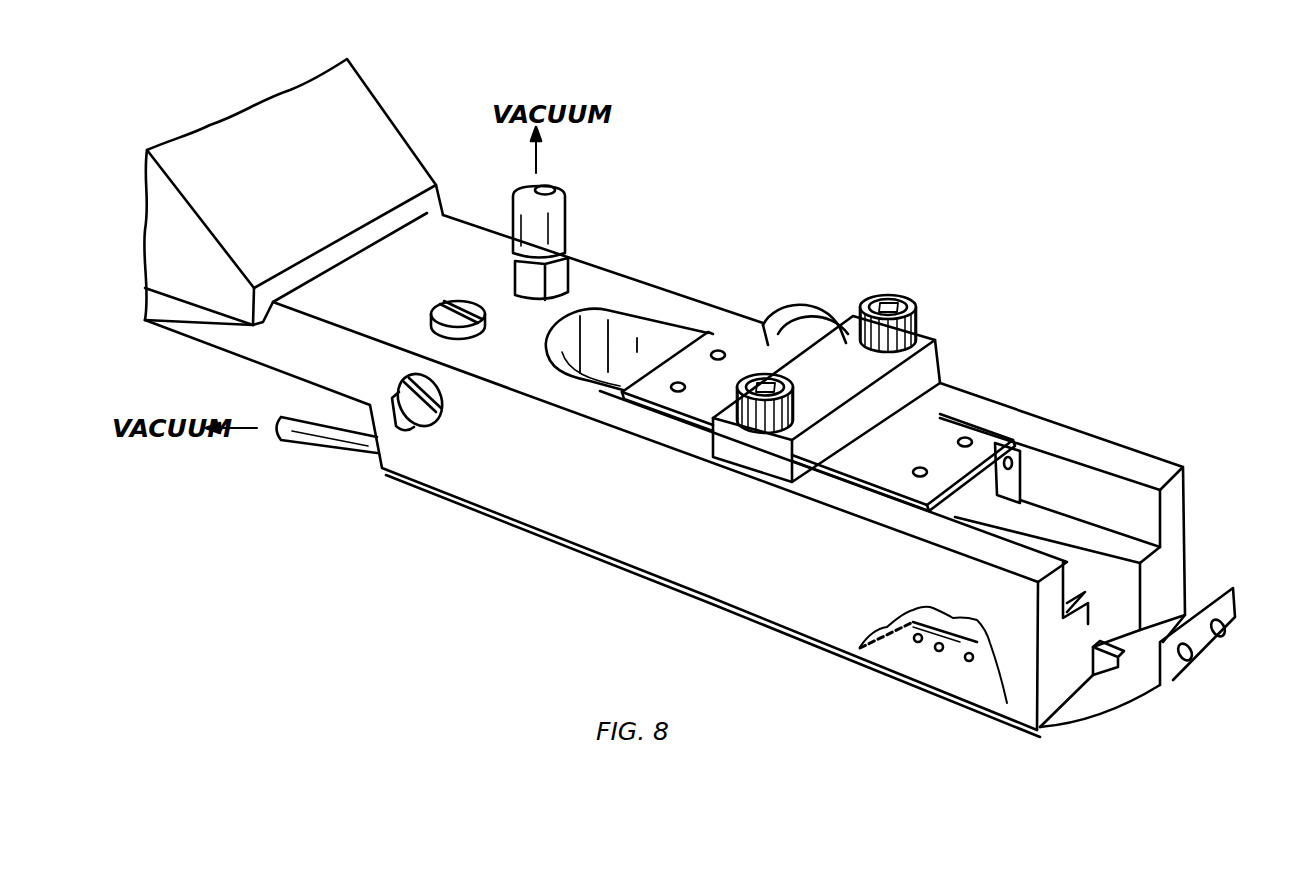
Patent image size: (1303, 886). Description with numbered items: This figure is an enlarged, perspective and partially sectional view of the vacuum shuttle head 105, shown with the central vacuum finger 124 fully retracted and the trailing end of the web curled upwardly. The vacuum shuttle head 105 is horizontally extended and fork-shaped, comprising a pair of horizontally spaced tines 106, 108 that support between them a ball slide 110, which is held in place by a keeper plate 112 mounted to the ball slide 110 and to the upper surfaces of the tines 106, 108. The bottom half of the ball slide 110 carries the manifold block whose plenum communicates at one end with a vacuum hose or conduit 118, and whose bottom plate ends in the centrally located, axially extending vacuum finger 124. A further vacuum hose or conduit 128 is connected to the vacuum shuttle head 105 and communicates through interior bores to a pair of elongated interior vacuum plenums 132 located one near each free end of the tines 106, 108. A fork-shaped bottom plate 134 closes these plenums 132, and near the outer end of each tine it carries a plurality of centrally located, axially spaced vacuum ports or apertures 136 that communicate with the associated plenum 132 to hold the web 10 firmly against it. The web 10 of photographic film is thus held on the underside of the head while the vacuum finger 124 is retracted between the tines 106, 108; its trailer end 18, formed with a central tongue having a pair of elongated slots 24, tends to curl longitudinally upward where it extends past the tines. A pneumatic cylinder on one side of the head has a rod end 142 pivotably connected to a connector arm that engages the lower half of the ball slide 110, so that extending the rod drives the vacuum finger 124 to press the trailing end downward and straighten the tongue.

The web 10 is at (1027, 730).
The trailer end 18 is at (1217, 603).
The elongated slots 24 is at (1218, 640).
The vacuum shuttle head 105 is at (397, 152).
The tine 106 is at (1052, 588).
The tine 108 is at (1175, 517).
The ball slide 110 is at (942, 427).
The keeper plate 112 is at (930, 358).
The vacuum hose or conduit 118 is at (317, 443).
The vacuum finger 124 is at (1118, 665).
The vacuum hose or conduit 128 is at (567, 218).
The interior vacuum plenums 132 is at (913, 622).
The bottom plate 134 is at (963, 693).
The vacuum ports or apertures 136 is at (918, 642).
The rod end 142 is at (815, 308).